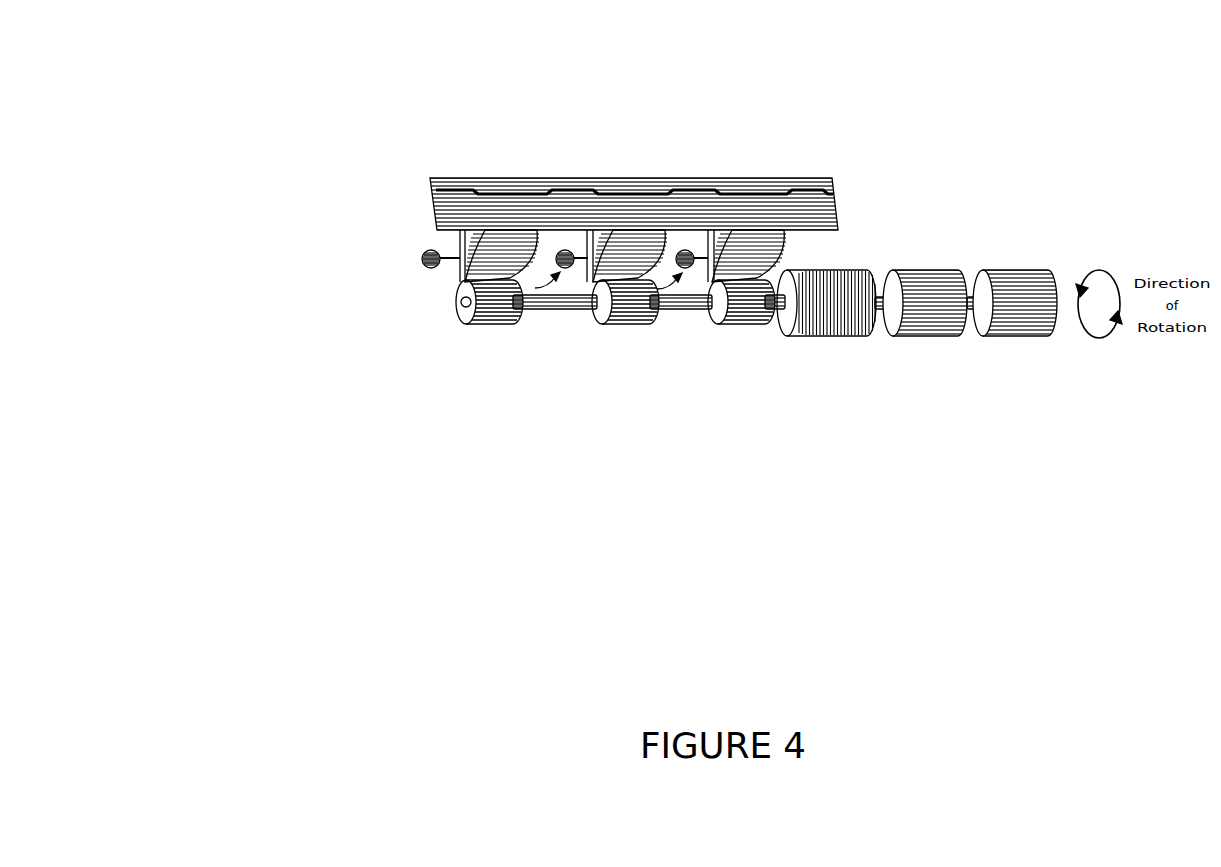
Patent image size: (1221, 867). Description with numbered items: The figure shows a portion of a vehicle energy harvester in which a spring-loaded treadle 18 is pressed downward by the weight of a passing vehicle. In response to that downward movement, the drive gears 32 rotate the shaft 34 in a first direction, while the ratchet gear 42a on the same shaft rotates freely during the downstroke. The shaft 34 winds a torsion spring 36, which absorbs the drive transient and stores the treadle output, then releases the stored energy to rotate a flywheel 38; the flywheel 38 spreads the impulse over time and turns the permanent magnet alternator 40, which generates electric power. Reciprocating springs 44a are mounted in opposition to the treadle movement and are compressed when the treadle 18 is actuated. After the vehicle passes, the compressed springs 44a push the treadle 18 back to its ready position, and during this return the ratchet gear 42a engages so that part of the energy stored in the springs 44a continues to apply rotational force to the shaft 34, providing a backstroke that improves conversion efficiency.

The treadle 18 is at (634, 131).
The reciprocating springs 44a is at (434, 272).
The drive gear 32 is at (621, 377).
The ratchet gear 42a is at (620, 377).
The shaft 34 is at (558, 309).
The torsion spring 36 is at (832, 397).
The flywheel 38 is at (925, 231).
The permanent magnet alternator (PMA) 40 is at (1018, 387).